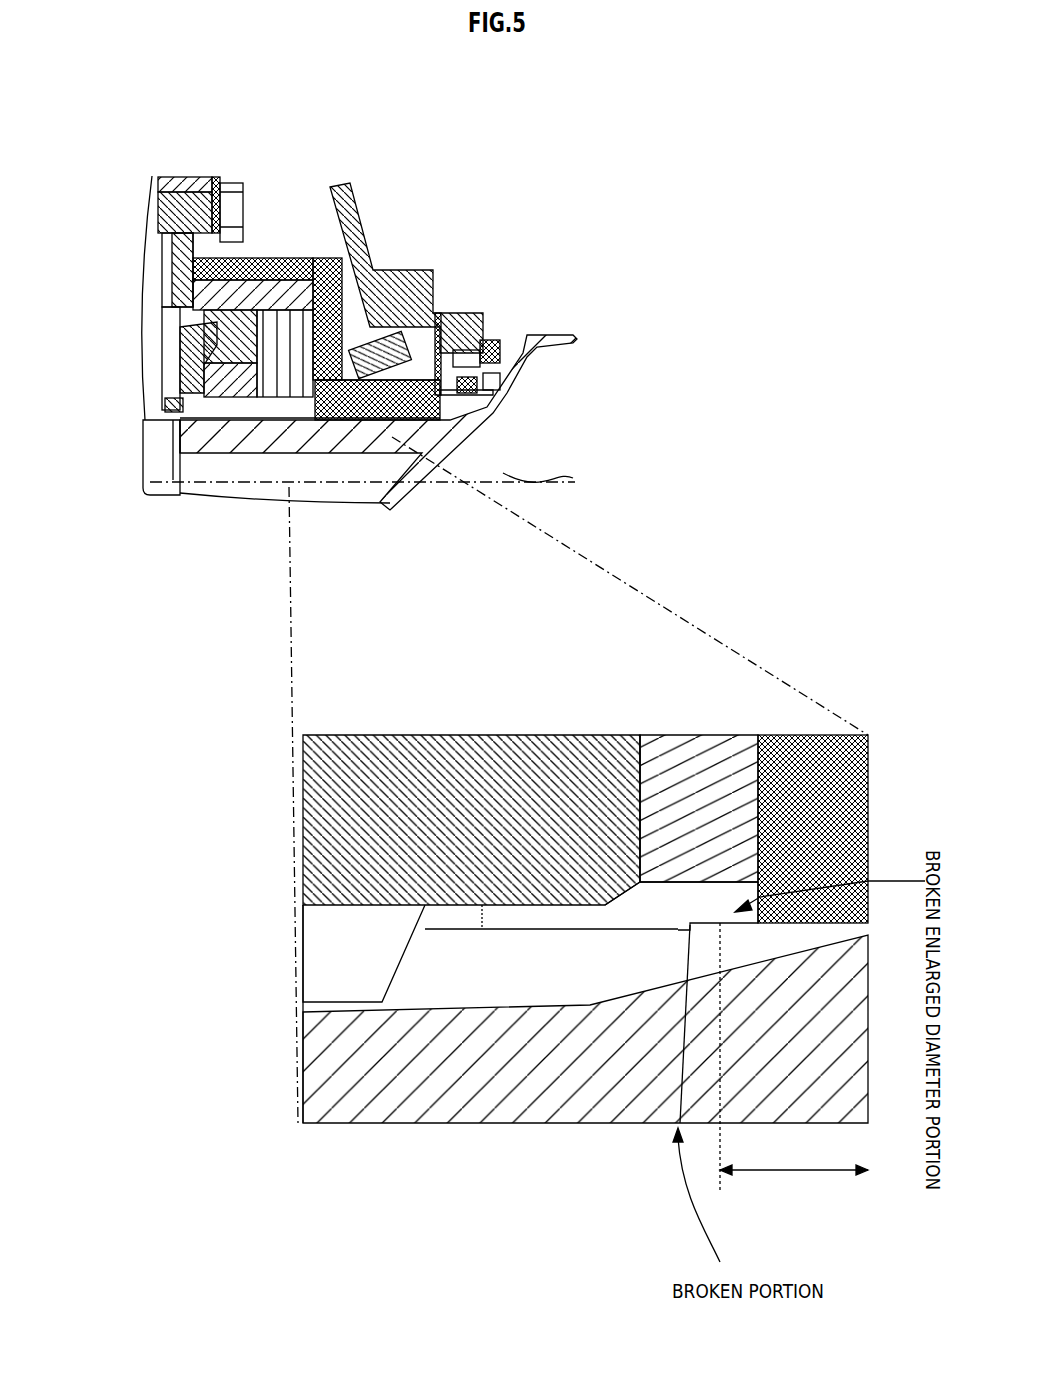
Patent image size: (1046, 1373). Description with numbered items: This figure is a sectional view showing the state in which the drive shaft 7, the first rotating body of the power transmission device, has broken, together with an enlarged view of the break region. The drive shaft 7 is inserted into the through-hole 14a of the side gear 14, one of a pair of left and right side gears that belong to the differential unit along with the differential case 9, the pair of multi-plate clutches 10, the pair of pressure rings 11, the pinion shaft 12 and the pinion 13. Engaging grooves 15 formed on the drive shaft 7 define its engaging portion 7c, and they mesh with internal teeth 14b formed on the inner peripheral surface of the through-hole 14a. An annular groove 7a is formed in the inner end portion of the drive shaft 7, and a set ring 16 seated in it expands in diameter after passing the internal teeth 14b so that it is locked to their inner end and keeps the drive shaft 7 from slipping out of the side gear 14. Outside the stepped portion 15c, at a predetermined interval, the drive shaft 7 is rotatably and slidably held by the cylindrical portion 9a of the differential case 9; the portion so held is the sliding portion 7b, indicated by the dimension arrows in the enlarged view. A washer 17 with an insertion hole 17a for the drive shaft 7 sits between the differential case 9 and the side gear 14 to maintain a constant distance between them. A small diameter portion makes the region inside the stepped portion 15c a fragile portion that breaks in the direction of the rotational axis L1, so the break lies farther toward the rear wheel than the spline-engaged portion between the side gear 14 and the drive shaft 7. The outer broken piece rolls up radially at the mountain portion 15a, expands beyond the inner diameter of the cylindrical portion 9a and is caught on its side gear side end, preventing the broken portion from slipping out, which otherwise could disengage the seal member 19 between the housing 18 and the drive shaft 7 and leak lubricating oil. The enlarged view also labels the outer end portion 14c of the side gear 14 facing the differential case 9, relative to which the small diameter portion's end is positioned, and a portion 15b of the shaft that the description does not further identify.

The side gear 14 is at (520, 787).
The washer 17 is at (668, 778).
The outer end portion 14c is at (655, 740).
The differential case 9 is at (842, 735).
The stepped portion 15c is at (770, 848).
The sliding portion 7b is at (318, 125).
The engaging grooves 15 is at (472, 1008).
The mountain portion 15a is at (482, 930).
The second clearance 15b is at (642, 1123).
The insertion hole 17a is at (677, 888).
The multi-plate clutches 10 is at (300, 258).
The pressure rings 11 is at (165, 290).
The pinion 13 is at (173, 357).
The pinion shaft 12 is at (163, 387).
The engaging portion 7c is at (177, 360).
The annular groove 7a is at (177, 412).
The drive shaft 7 is at (450, 440).
The set ring 16 is at (183, 495).
The housing 18 is at (365, 300).
The seal member 19 is at (500, 345).
The rotational axis L1 is at (376, 467).
The internal teeth 14b is at (240, 455).
The through-hole 14a is at (275, 455).
The cylindrical portion 9a is at (438, 425).